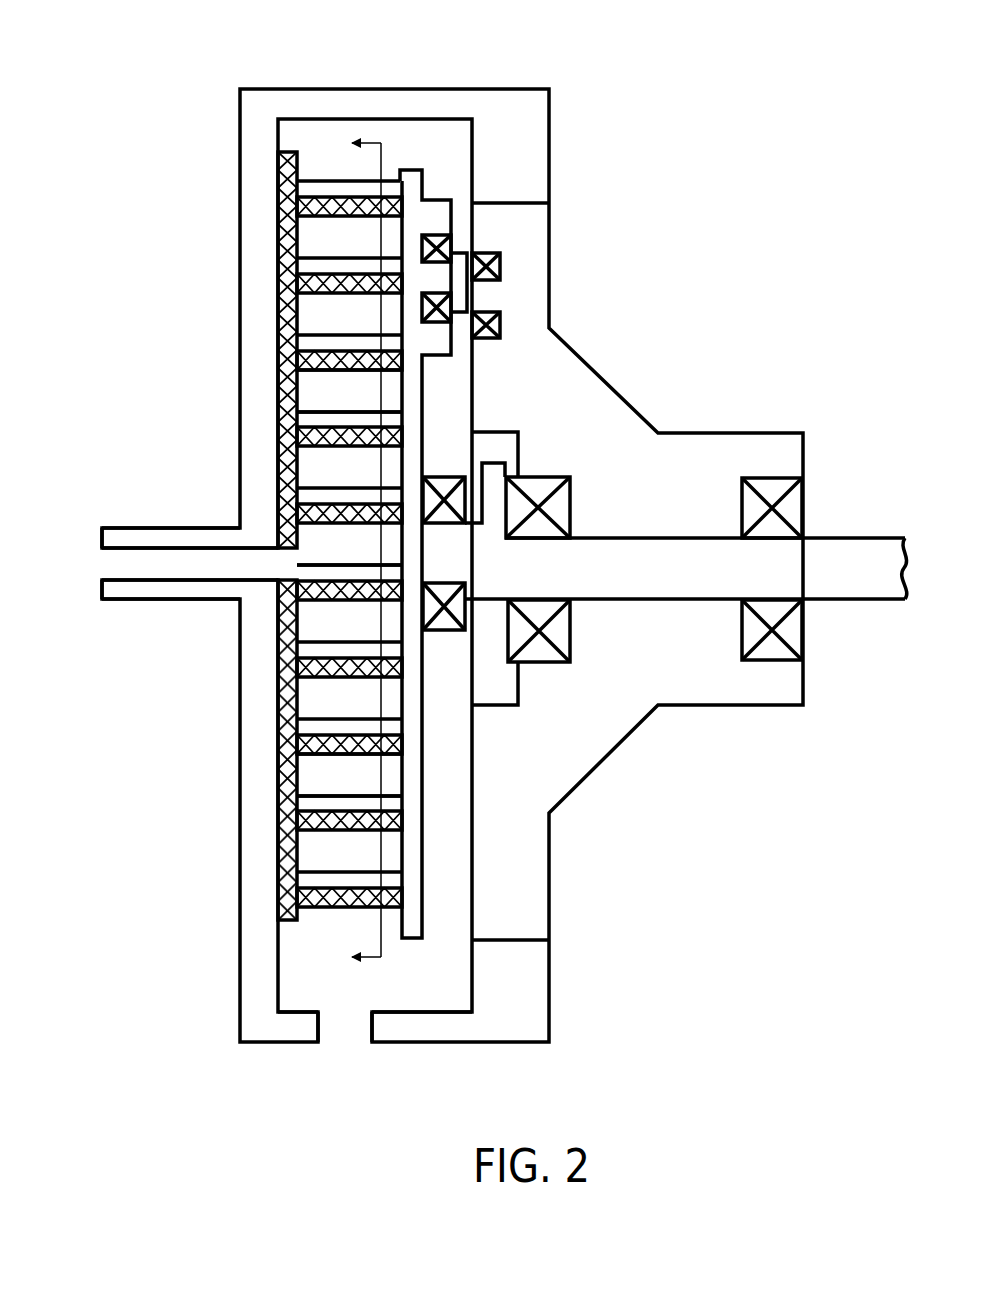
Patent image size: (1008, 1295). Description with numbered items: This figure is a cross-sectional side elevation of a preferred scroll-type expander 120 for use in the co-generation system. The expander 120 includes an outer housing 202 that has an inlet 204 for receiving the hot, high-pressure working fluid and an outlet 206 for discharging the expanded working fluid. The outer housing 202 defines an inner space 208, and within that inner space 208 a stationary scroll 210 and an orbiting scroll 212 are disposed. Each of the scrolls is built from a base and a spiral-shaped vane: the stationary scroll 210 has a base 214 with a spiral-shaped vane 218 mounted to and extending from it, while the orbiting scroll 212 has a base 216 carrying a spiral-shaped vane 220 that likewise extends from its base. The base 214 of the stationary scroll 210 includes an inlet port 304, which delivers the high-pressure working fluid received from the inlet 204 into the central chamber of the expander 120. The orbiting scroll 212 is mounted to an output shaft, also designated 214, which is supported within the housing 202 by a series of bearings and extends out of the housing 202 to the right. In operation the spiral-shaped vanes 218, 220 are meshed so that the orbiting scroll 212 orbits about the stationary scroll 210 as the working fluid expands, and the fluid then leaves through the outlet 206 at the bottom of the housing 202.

The scroll-type expander 120 is at (590, 50).
The outer housing 202 is at (240, 162).
The inlet 204 is at (101, 565).
The outlet 206 is at (342, 1028).
The inner space 208 is at (450, 989).
The stationary scroll 210 is at (316, 912).
The orbiting scroll 212 is at (392, 172).
The base of stationary scroll / output shaft 214 is at (867, 538).
The base of orbiting scroll 216 is at (396, 772).
The spiral-shaped vane of stationary scroll 218 is at (320, 304).
The spiral-shaped vane of orbiting scroll 220 is at (387, 403).
The inlet port 304 is at (293, 557).